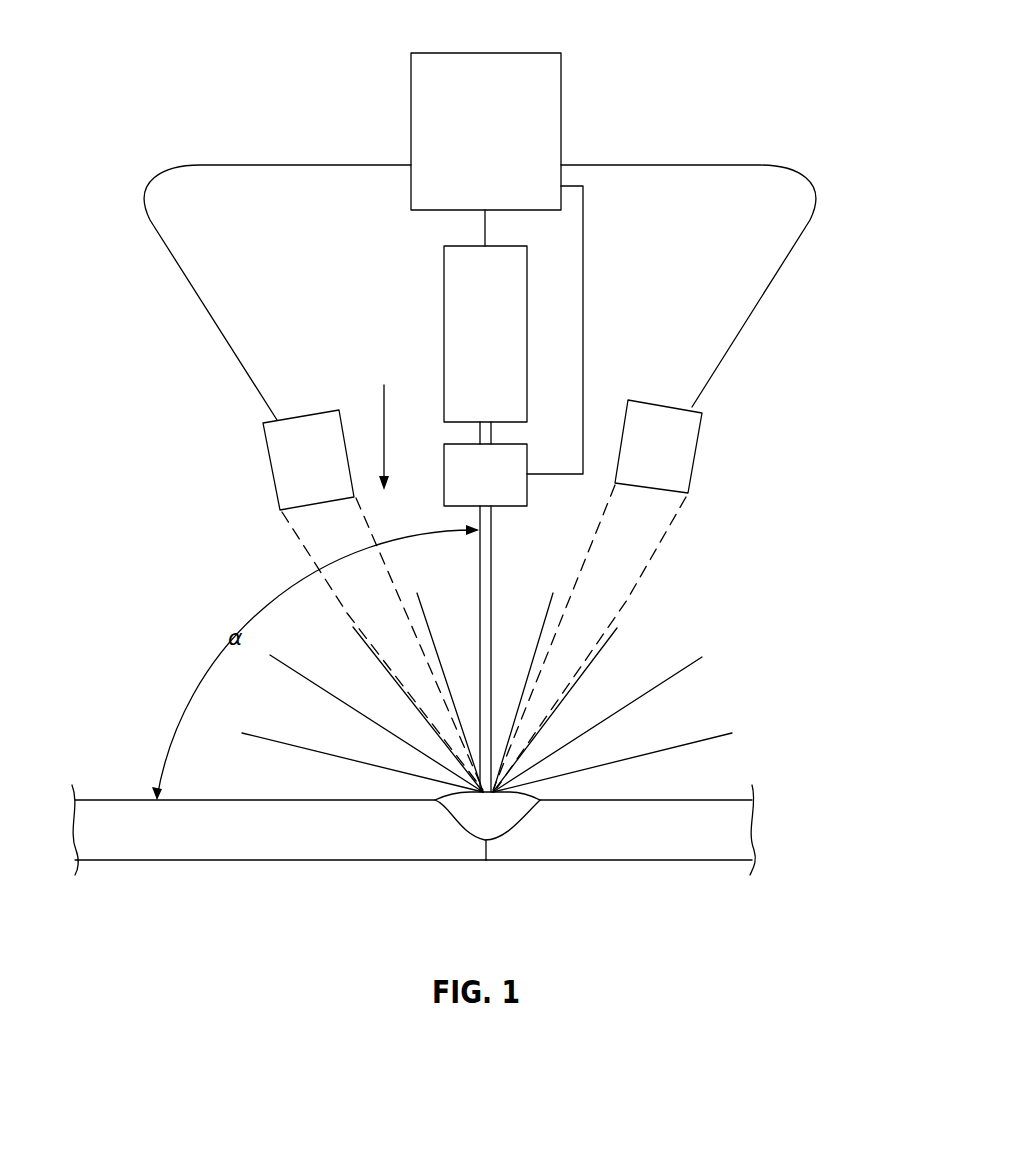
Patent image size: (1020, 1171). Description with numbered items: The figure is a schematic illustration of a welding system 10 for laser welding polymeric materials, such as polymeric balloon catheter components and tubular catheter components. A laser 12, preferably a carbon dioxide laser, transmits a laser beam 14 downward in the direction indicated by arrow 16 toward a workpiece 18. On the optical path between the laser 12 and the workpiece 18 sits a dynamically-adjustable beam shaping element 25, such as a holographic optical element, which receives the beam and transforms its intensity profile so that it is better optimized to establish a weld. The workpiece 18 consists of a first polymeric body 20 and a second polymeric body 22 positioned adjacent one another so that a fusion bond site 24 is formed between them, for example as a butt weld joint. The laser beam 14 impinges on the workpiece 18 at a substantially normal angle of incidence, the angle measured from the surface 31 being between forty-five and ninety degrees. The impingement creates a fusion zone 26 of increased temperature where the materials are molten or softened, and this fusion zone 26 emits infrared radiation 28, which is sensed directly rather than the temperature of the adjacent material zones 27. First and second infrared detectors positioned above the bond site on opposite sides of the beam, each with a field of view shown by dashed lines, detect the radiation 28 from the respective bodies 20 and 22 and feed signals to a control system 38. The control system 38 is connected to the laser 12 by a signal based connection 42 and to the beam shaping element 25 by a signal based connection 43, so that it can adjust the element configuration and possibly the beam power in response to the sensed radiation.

The welding system 10 is at (703, 77).
The laser 12 is at (499, 347).
The laser beam 14 is at (478, 561).
The arrow 16 is at (385, 402).
The workpiece 18 is at (599, 888).
The first polymeric body 20 is at (366, 856).
The second polymeric body 22 is at (686, 856).
The fusion bond site 24 is at (486, 855).
The dynamically-adjustable beam shaping element 25 is at (499, 486).
The fusion zone 26 is at (498, 830).
The adjacent material zones 27 is at (436, 800).
The infrared radiation 28 is at (650, 692).
The surface 31 is at (100, 798).
The control system 38 is at (499, 143).
The signal based connection 42 is at (484, 227).
The signal based connection 43 is at (584, 332).